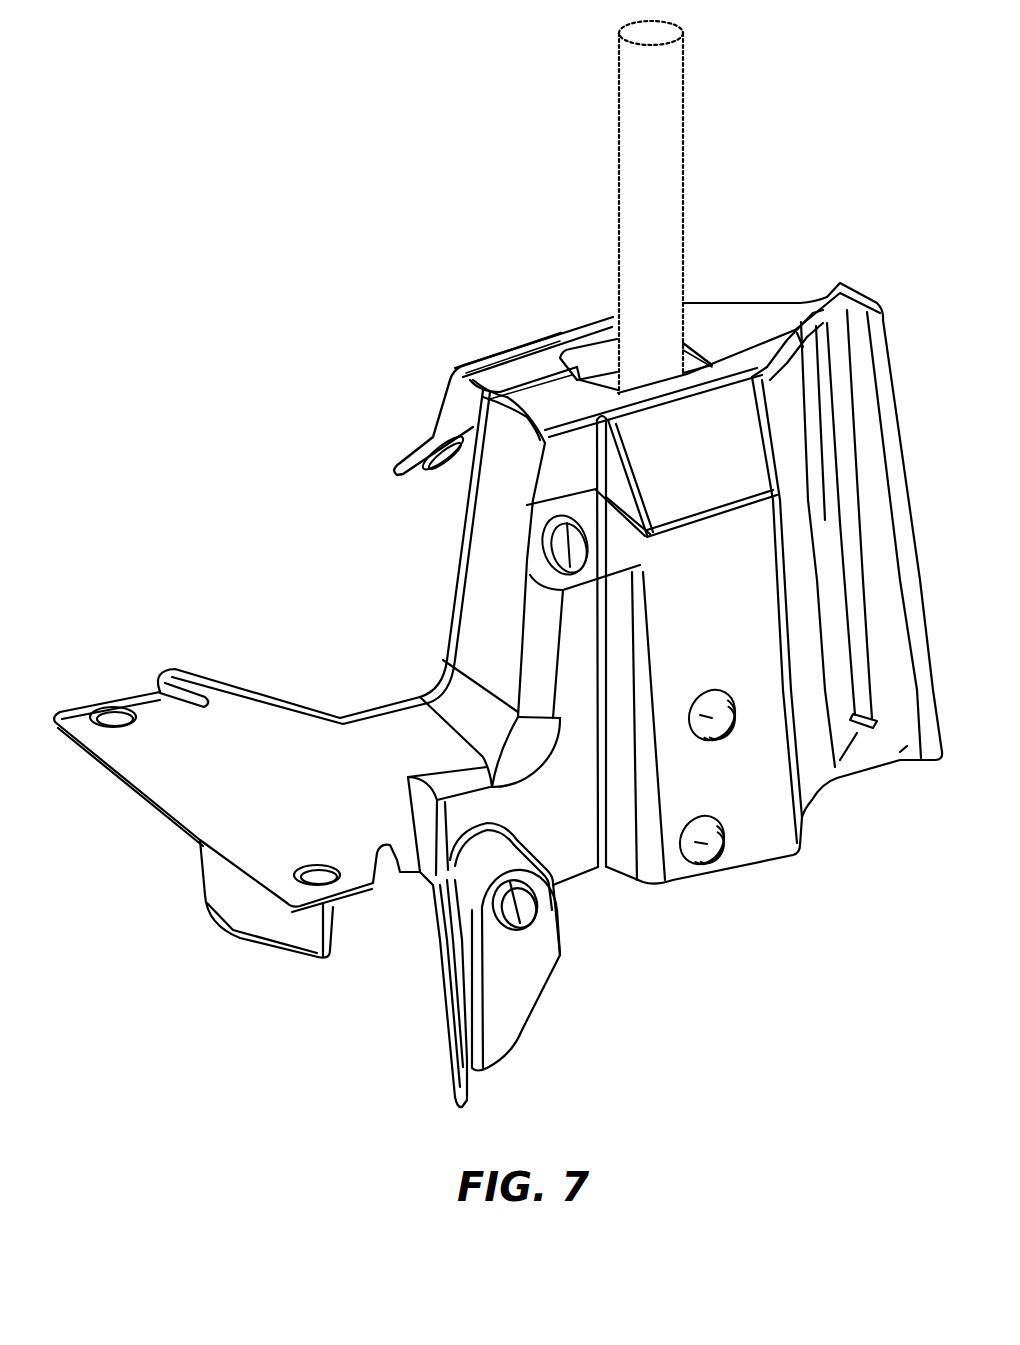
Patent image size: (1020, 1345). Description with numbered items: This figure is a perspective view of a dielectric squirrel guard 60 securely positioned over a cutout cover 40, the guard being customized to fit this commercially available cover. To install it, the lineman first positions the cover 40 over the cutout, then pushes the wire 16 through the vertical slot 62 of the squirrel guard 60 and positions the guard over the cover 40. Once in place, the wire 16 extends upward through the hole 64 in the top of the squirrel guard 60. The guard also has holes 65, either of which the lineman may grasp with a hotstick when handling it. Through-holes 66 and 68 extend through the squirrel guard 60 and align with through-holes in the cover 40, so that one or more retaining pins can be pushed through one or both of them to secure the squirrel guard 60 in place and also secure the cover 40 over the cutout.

The wire 16 is at (613, 88).
The cover 40 is at (387, 727).
The squirrel guard 60 is at (735, 320).
The vertical slot 62 is at (457, 413).
The hole 64 is at (587, 370).
The holes 65 is at (560, 547).
The through-hole 66 is at (723, 737).
The through-hole 68 is at (717, 853).